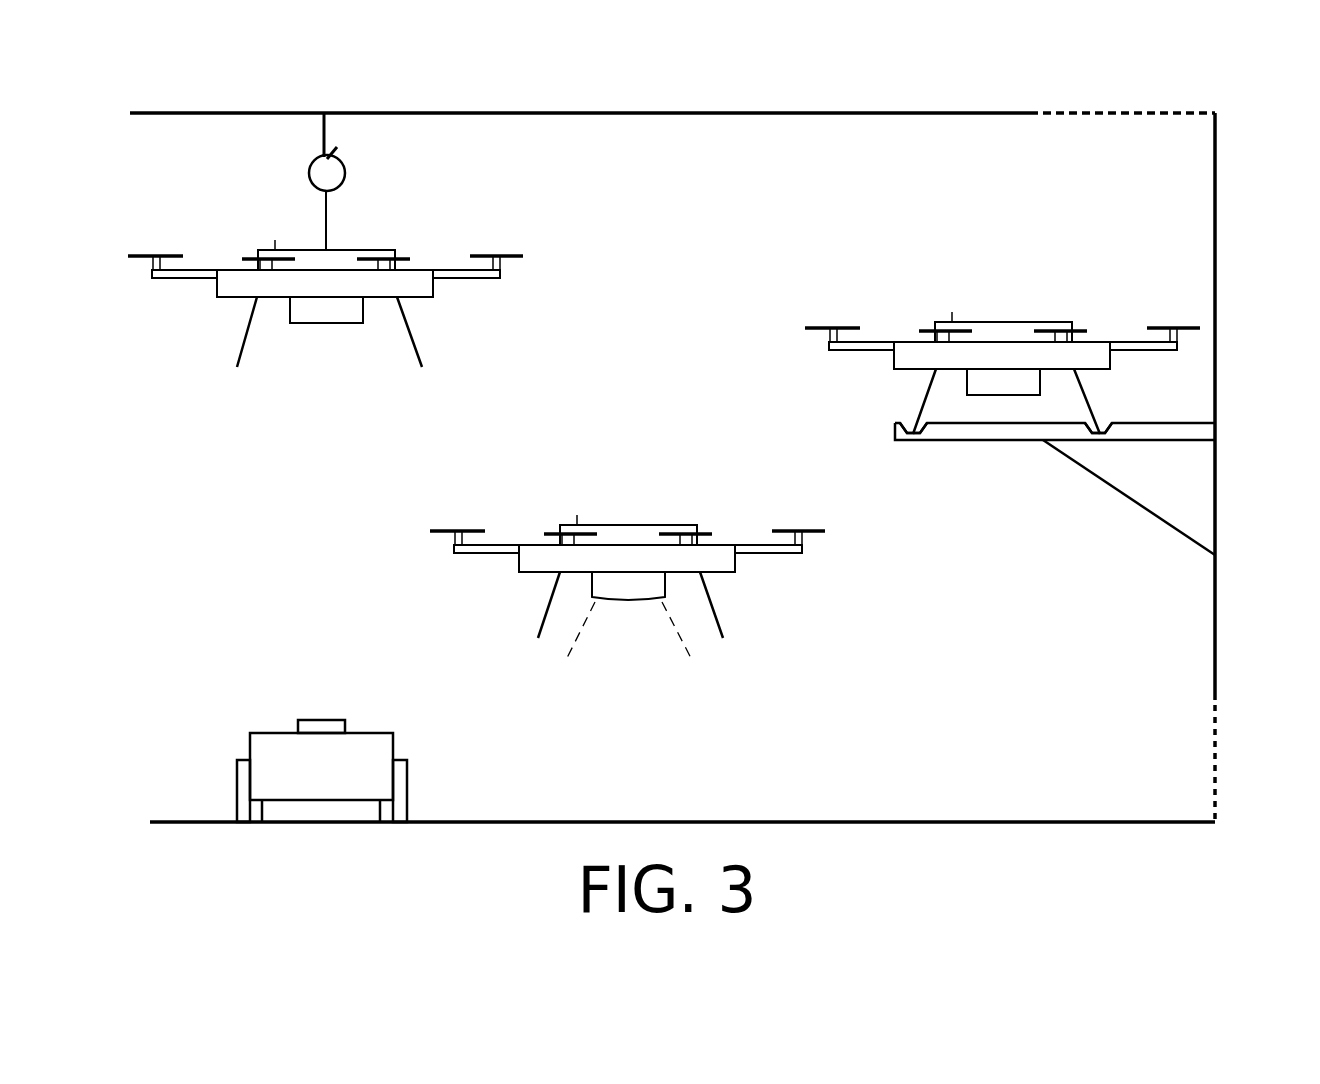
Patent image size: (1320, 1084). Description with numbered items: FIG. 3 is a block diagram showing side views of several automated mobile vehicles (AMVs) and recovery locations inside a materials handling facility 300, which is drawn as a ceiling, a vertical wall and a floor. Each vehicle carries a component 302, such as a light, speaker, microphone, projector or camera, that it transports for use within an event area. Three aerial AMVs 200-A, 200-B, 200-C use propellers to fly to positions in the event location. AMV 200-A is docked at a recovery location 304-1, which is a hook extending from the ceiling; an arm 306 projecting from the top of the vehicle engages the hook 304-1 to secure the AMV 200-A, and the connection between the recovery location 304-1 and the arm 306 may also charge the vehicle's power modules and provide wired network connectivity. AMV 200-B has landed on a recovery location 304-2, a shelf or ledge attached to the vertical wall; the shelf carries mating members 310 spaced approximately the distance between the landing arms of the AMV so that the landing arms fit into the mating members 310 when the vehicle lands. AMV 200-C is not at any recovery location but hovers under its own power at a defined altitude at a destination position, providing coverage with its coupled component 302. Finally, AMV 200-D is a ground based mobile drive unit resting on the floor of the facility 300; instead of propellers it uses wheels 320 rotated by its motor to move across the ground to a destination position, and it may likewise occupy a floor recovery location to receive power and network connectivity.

The materials handling facility 300 is at (1170, 90).
The recovery location (hook) 304-1 is at (326, 132).
The arm 306 is at (308, 176).
The aerial automated mobile vehicle (docked) 200-A is at (428, 217).
The aerial automated mobile vehicle (landed on shelf) 200-B is at (1048, 294).
The aerial automated mobile vehicle (hovering) 200-C is at (708, 507).
The ground based automated mobile vehicle (mobile drive unit) 200-D is at (395, 726).
The component 302 is at (326, 324).
The recovery location (shelf or ledge) 304-2 is at (1192, 430).
The mating members 310 is at (913, 441).
The wheels 320 is at (237, 787).